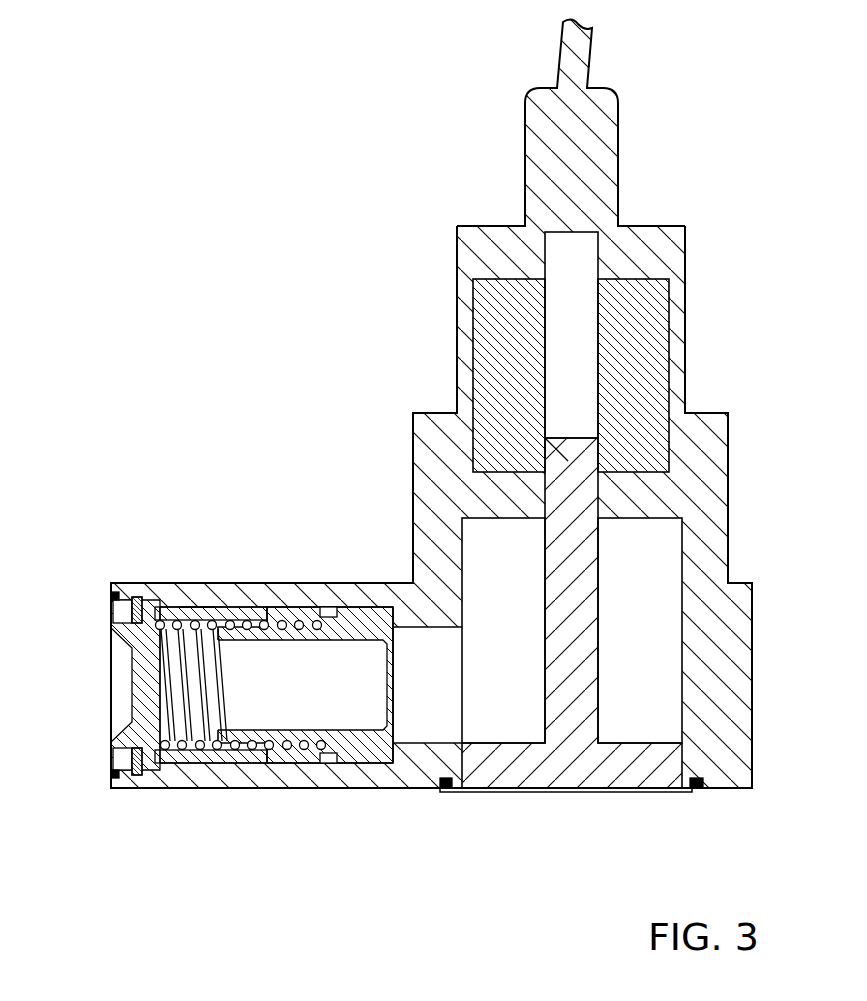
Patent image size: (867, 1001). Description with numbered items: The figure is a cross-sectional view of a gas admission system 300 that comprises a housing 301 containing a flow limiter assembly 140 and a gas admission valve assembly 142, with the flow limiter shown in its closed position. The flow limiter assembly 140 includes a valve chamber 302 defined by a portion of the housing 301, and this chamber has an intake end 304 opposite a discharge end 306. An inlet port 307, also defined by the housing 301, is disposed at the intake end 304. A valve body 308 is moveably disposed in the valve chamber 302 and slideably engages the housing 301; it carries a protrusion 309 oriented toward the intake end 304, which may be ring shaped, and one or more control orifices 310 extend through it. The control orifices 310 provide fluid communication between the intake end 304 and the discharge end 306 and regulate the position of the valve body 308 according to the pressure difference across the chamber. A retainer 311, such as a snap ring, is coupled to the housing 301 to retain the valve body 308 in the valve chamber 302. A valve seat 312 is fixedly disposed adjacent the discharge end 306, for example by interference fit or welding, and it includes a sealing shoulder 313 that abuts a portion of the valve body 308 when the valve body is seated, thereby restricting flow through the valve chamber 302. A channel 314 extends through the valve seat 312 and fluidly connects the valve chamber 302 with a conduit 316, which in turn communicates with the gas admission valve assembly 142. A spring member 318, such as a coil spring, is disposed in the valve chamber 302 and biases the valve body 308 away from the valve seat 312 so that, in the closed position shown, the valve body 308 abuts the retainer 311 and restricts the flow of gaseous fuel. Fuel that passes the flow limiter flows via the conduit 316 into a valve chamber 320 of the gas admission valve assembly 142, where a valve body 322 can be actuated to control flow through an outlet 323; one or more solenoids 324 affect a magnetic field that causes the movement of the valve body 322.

The gas admission system 300 is at (179, 48).
The flow limiter assembly 140 is at (290, 563).
The gas admission valve assembly 142 is at (703, 316).
The housing 301 is at (368, 583).
The valve chamber 302 is at (290, 758).
The intake end 304 is at (110, 618).
The discharge end 306 is at (377, 742).
The inlet port 307 is at (110, 751).
The valve body 308 is at (243, 763).
The protrusion 309 is at (110, 743).
The control orifices 310 is at (167, 620).
The retainer 311 is at (137, 600).
The valve seat 312 is at (352, 745).
The sealing shoulder 313 is at (197, 610).
The channel 314 is at (288, 698).
The conduit 316 is at (409, 698).
The spring member 318 is at (218, 750).
The valve chamber 320 is at (683, 655).
The valve body 322 is at (572, 568).
The outlet 323 is at (637, 793).
The solenoids 324 is at (762, 343).